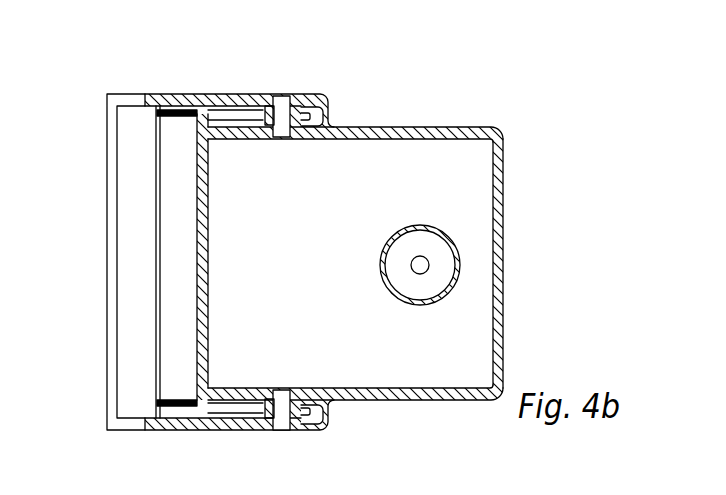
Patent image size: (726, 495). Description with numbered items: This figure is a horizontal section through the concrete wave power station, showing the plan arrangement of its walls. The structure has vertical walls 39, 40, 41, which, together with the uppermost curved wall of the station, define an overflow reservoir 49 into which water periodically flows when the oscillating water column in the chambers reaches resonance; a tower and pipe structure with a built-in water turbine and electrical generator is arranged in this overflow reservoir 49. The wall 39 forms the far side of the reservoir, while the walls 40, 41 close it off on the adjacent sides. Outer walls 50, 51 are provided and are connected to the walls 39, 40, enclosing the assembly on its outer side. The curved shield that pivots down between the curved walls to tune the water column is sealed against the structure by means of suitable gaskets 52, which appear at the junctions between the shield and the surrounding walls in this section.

The vertical wall 39 is at (377, 127).
The vertical wall 40 is at (377, 401).
The vertical wall 41 is at (500, 324).
The overflow reservoir 49 is at (472, 175).
The outer wall 50 is at (232, 95).
The outer wall 51 is at (232, 426).
The gasket 52 is at (192, 113).